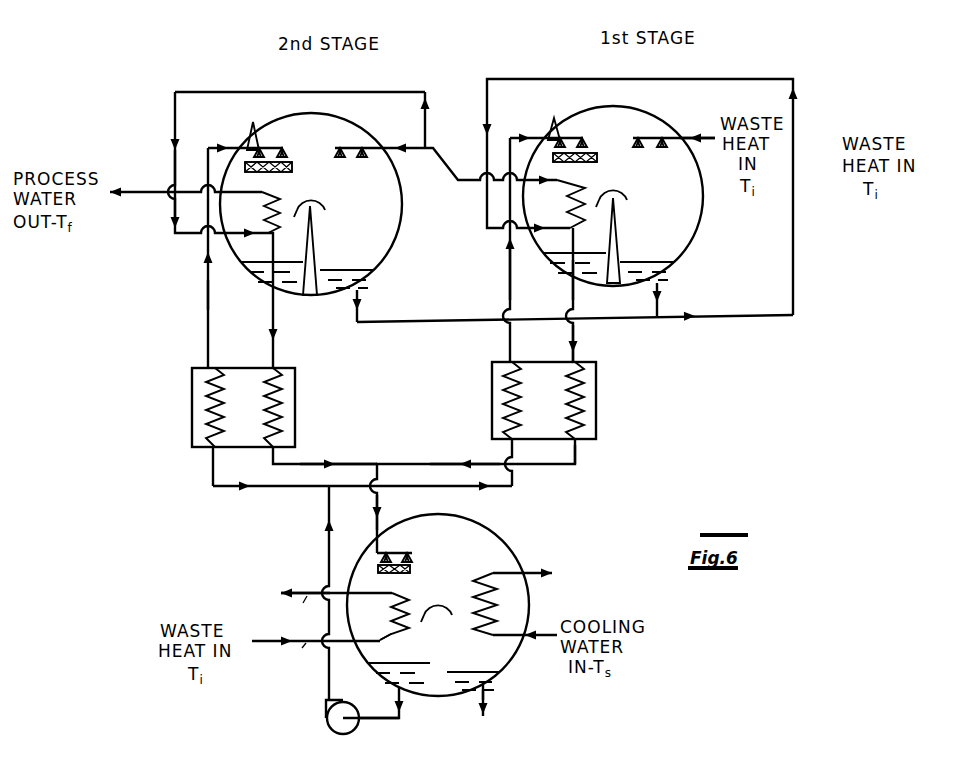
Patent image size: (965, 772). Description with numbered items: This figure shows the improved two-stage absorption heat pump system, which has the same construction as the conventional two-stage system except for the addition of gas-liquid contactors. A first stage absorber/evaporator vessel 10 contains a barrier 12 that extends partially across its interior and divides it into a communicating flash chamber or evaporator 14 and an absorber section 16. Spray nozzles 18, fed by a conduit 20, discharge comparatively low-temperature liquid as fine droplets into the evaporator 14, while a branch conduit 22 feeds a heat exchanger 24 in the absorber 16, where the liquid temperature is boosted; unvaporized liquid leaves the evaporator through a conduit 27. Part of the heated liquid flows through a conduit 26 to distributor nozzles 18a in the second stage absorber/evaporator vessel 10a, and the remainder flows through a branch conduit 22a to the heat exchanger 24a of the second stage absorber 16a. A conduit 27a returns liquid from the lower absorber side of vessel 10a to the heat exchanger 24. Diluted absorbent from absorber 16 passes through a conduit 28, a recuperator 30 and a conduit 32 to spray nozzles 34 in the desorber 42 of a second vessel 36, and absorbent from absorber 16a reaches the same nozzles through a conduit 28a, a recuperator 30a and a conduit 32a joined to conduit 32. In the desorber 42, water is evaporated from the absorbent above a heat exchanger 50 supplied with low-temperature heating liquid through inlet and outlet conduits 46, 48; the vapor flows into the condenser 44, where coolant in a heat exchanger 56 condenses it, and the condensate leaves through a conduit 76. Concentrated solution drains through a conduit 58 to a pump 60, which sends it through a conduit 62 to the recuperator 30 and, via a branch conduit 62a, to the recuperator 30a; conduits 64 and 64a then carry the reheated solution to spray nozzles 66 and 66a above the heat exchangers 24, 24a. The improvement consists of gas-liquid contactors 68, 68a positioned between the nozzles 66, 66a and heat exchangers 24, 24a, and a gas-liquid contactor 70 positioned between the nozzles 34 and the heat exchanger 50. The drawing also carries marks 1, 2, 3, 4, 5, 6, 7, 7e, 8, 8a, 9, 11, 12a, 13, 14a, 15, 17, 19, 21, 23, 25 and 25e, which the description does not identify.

The waste heat inlet point 1 is at (697, 120).
The condensate outlet point of first stage 2 is at (665, 294).
The vapor transfer line from second stage 3 is at (634, 183).
The liquid outlet of first stage coil 4 is at (572, 308).
The heat exchanger outlet point 5 is at (586, 456).
The condenser feed line point 6 is at (465, 449).
The spray feed line to first stage 7 is at (512, 235).
The spray discharge point 7e is at (588, 172).
The vapor space of first stage 8 is at (611, 180).
The vapor space of second stage 8a is at (310, 195).
The interstage liquid line 9 is at (446, 173).
The vessel 10 is at (712, 232).
The second stage absorber/evaporator vessel 10a is at (341, 103).
The recirculation riser line 11 is at (408, 120).
The barrier 12 is at (620, 236).
The vapor jet of second stage 12a is at (316, 233).
The second stage recirculation line 13 is at (294, 142).
The flash chamber 14 is at (663, 219).
The liquid pool in second stage 14a is at (375, 257).
The heat exchanger outlet to condenser 15 is at (325, 454).
The absorber section 16 is at (557, 211).
The absorber 16a is at (250, 223).
The spray feed line to second stage 17 is at (244, 243).
The spray nozzles 18 is at (636, 147).
The distributor nozzles 18a is at (340, 157).
The process water outlet 19 is at (186, 179).
The conduit 20 is at (316, 628).
The waste heat outlet from condenser coil 21 is at (302, 577).
The conduit 22 is at (498, 698).
The branch conduit 22a is at (281, 92).
The cooling water inlet 23 is at (525, 622).
The heat exchanger 24 is at (541, 403).
The heat exchanger 24a is at (264, 261).
The condenser inlet point 25 is at (362, 512).
The condenser spray discharge point 25e is at (408, 582).
The conduit 26 is at (140, 197).
The conduit 27 is at (436, 597).
The conduit 27a is at (437, 318).
The conduit 28 is at (585, 327).
The conduit 28a is at (274, 316).
The heat exchanger 30 is at (597, 383).
The recuperator 30a is at (296, 395).
The conduit 32 is at (568, 465).
The conduit 32a is at (367, 463).
The spray nozzles 34 is at (393, 552).
The vessel 36 is at (512, 524).
The desorber 42 is at (380, 626).
The condenser 44 is at (483, 661).
The inlet conduit 46 is at (298, 657).
The outlet conduit 48 is at (299, 612).
The heat exchanger 50 is at (402, 633).
The heat exchanger 56 is at (497, 604).
The conduit 58 is at (379, 722).
The pump 60 is at (326, 718).
The conduit 62 is at (470, 488).
The branch conduit 62a is at (252, 490).
The conduit 64 is at (508, 262).
The conduit 64a is at (207, 293).
The spray nozzles 66 is at (588, 146).
The nozzles 66a is at (285, 155).
The gas-liquid contactor 68 is at (597, 151).
The gas-liquid contactor 68a is at (293, 160).
The gas-liquid contactor 70 is at (412, 568).
The conduit 76 is at (483, 696).